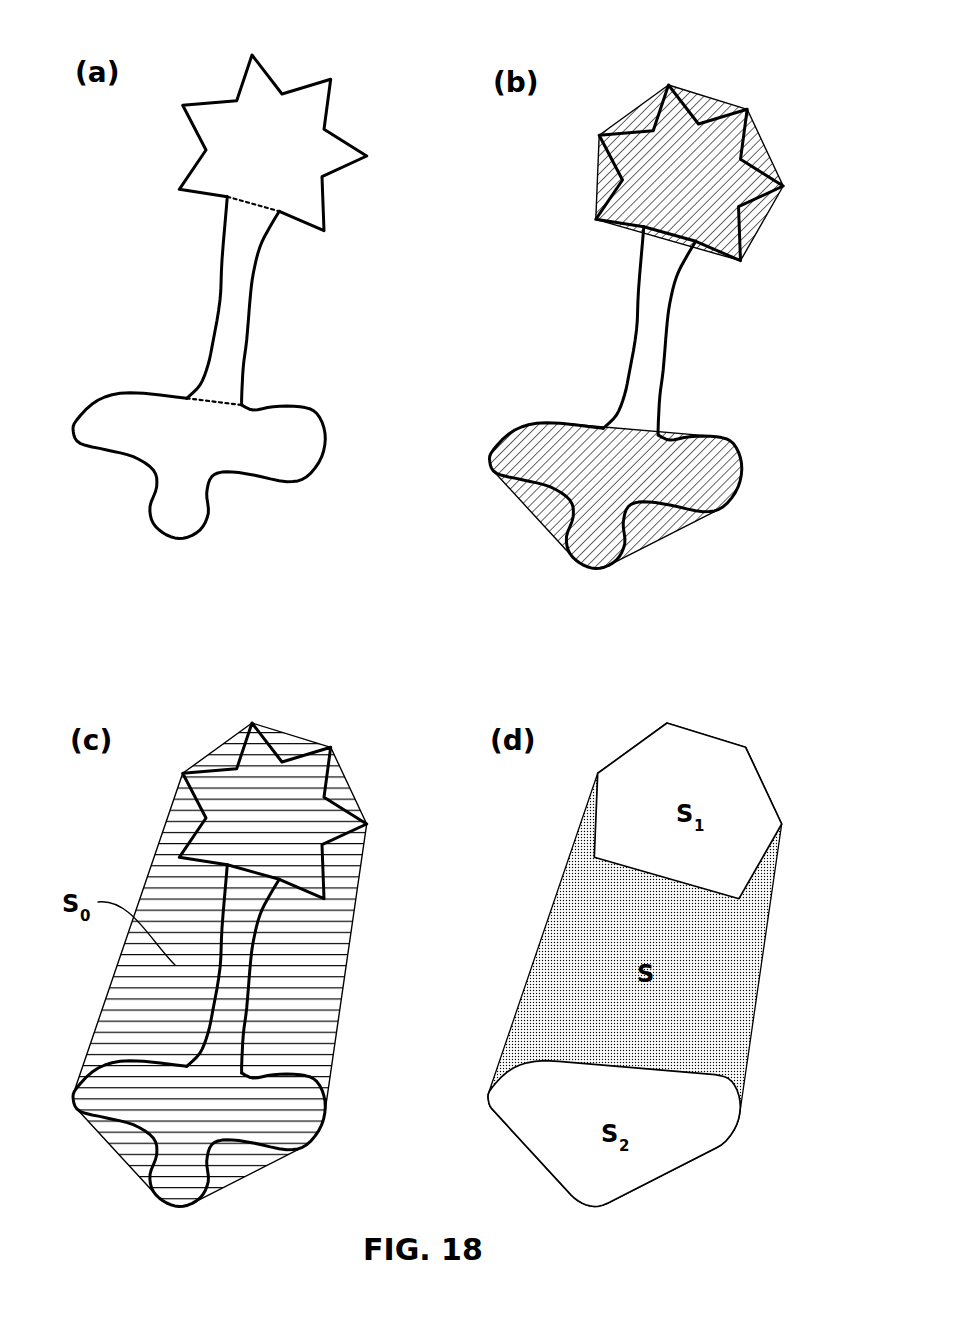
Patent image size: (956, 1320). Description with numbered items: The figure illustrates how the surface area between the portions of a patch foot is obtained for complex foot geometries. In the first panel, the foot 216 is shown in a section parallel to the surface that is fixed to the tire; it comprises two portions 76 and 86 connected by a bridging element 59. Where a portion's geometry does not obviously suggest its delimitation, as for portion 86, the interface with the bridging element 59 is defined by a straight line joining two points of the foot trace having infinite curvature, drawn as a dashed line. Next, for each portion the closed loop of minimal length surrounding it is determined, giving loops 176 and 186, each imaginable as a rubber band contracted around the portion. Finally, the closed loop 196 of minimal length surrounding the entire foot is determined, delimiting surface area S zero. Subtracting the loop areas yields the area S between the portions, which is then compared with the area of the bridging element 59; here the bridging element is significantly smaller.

The foot 216 is at (133, 240).
The portion 76 is at (272, 143).
The bridging element 59 is at (232, 285).
The portion 86 is at (199, 466).
The closed loop 176 is at (703, 95).
The closed loop 186 is at (703, 517).
The closed loop 196 is at (340, 1007).